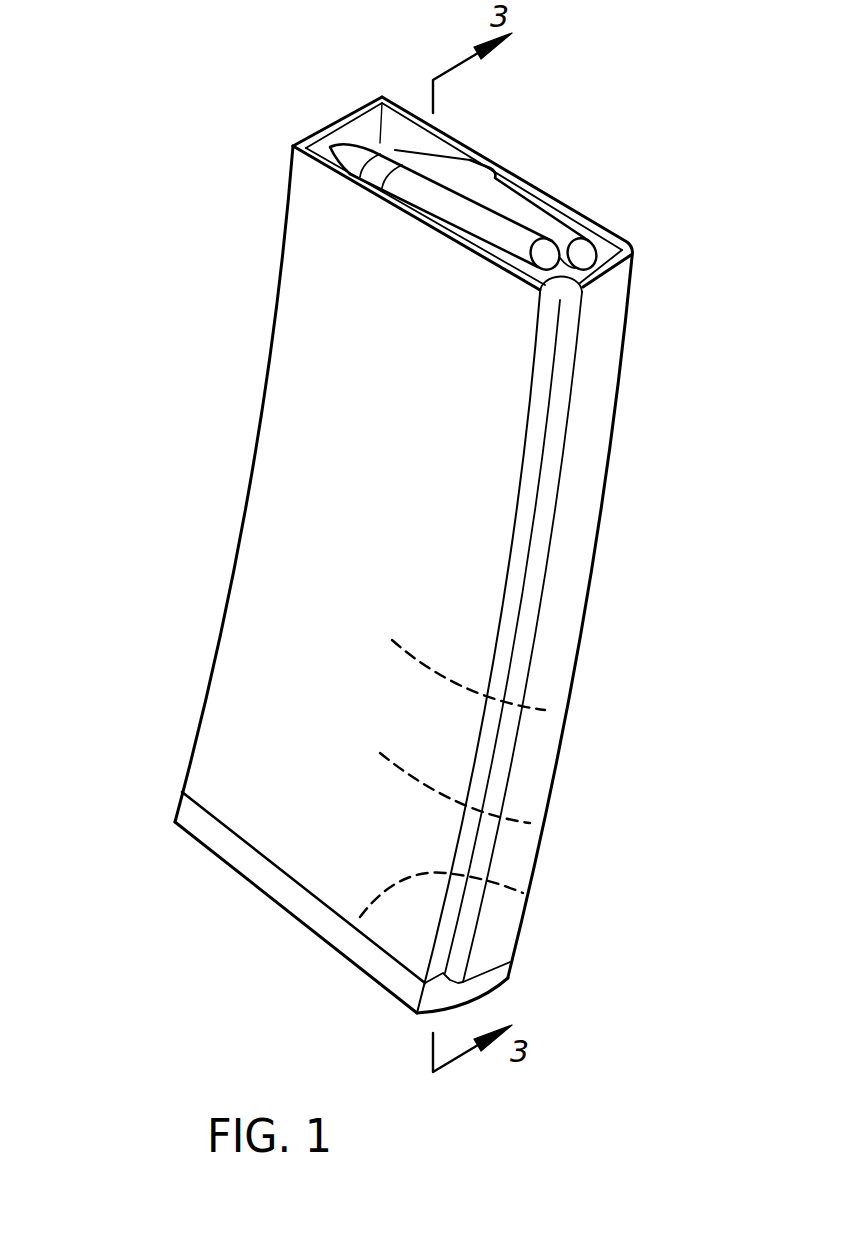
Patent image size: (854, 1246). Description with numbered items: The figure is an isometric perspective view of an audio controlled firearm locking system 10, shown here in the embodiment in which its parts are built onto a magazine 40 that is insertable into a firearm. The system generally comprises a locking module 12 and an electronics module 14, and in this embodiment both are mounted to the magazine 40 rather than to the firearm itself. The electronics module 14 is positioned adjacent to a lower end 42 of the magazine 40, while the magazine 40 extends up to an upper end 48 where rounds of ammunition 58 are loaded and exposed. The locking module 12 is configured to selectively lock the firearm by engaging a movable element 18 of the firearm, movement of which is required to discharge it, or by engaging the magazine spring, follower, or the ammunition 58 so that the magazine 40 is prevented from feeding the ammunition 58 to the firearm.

The audio controlled firearm locking system 10 is at (128, 374).
The locking module 12 is at (530, 823).
The electronics module 14 is at (523, 893).
The movable element 18 is at (545, 710).
The magazine 40 is at (602, 508).
The lower end 42 is at (307, 928).
The upper end 48 is at (578, 222).
The ammunition 58 is at (448, 197).